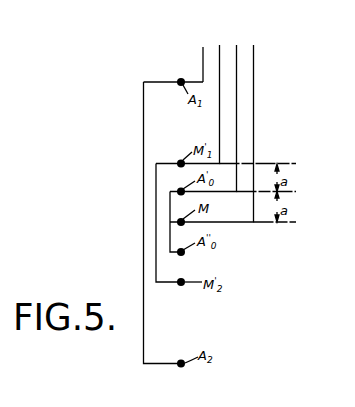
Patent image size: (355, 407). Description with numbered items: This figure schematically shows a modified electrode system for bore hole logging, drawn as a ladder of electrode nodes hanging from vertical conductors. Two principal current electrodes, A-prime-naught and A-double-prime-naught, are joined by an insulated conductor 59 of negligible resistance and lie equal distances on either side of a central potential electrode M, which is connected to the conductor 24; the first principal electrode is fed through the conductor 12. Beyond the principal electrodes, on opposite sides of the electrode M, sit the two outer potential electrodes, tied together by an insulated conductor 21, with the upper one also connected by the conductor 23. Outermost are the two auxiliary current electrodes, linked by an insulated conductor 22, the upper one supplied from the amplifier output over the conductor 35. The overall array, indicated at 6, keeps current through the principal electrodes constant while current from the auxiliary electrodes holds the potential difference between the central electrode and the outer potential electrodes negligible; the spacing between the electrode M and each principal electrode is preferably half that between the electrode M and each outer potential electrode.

The circuit arrangement 6 is at (102, 77).
The conductor 12 is at (236, 45).
The insulated conductor 21 is at (156, 183).
The insulated conductor 22 is at (144, 247).
The conductor 23 is at (220, 45).
The conductor 24 is at (254, 82).
The conductor 35 is at (203, 65).
The insulated conductor 59 is at (170, 213).